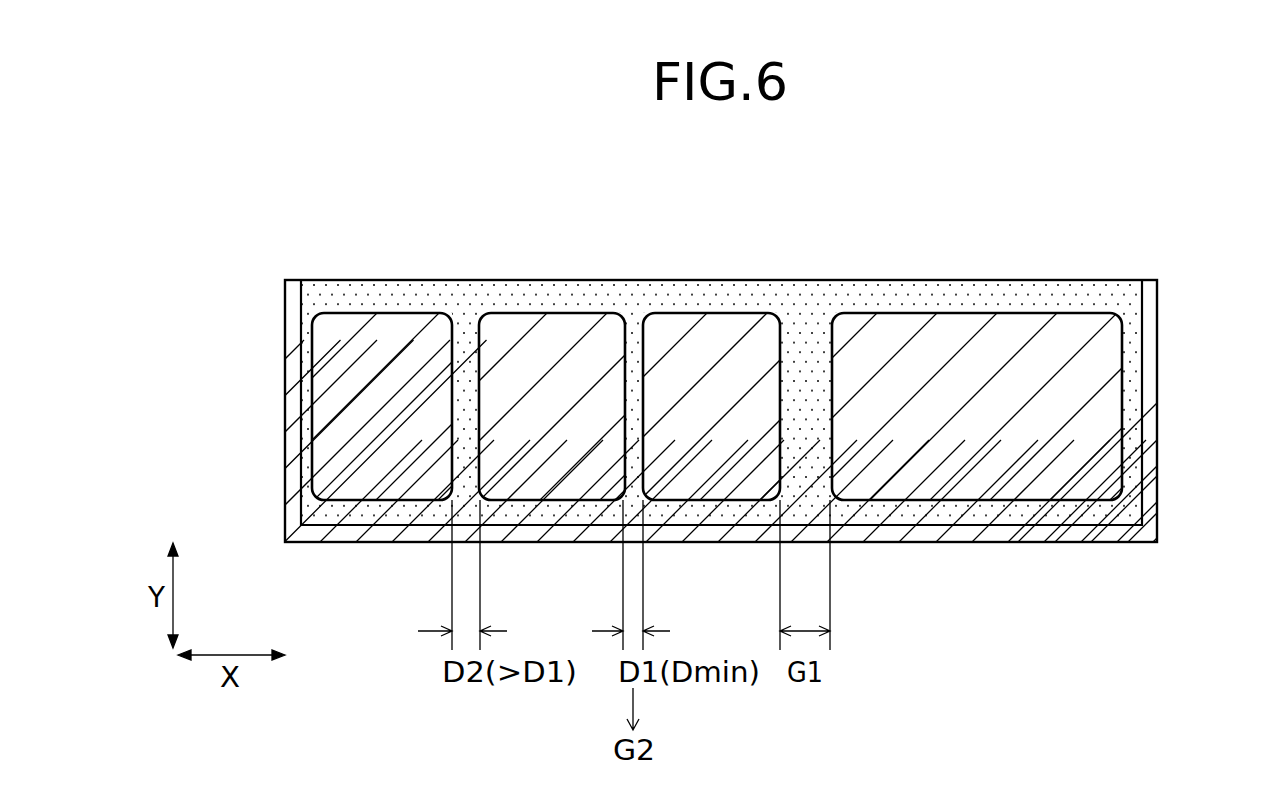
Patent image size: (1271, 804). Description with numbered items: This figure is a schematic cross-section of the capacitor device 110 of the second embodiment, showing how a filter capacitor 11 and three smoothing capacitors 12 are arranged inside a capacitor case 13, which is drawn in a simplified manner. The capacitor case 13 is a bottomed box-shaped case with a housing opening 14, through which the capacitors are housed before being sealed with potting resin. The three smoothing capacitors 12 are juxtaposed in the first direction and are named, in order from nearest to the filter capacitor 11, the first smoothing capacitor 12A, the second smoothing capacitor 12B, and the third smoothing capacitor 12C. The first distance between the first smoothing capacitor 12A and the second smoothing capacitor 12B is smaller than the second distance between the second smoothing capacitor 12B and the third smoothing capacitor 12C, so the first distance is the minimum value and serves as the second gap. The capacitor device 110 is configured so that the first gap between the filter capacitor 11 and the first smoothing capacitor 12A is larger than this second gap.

The capacitor device 110 is at (938, 223).
The filter capacitor 11 is at (993, 313).
The smoothing capacitors 12 is at (565, 342).
The first smoothing capacitor 12A is at (687, 313).
The second smoothing capacitor 12B is at (518, 313).
The third smoothing capacitor 12C is at (347, 313).
The capacitor case 13 is at (285, 370).
The housing opening 14 is at (838, 297).